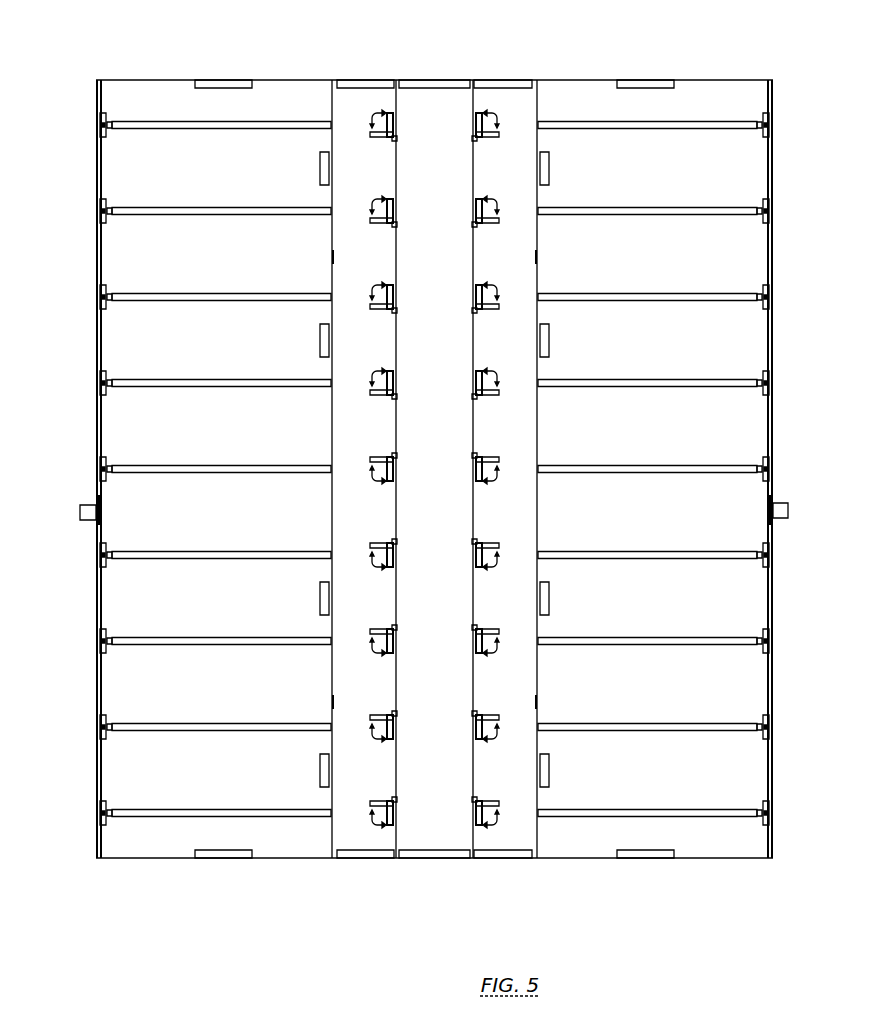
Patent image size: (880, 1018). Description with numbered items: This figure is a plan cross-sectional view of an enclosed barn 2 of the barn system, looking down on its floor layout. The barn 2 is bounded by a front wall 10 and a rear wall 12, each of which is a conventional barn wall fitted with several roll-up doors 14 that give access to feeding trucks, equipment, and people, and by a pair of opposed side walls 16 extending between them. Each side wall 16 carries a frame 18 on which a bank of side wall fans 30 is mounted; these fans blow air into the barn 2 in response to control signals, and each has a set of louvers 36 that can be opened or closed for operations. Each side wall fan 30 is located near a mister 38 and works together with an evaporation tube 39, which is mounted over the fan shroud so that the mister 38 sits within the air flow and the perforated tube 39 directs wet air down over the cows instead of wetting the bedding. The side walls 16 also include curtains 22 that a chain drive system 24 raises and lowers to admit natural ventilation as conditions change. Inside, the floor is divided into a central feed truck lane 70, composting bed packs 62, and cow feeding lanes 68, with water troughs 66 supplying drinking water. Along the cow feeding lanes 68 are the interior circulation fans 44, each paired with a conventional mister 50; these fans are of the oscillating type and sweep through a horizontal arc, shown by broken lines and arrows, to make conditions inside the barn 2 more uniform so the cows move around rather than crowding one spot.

The enclosed barn 2 is at (148, 77).
The front wall 10 is at (279, 858).
The rear wall 12 is at (283, 79).
The roll-up doors 14 is at (232, 84).
The side walls 16 is at (98, 154).
The frame 18 is at (98, 405).
The curtains 22 is at (101, 503).
The chain drive system 24 is at (80, 506).
The side wall fans 30 is at (769, 802).
The louvers 36 is at (769, 814).
The mister 38 is at (759, 810).
The evaporation tube 39 is at (680, 810).
The interior circulation fans 44 is at (499, 804).
The mister 50 is at (477, 800).
The composting bed packs 62 is at (225, 441).
The water troughs 66 is at (549, 768).
The cow feeding lanes 68 is at (530, 702).
The feed truck lane 70 is at (425, 273).